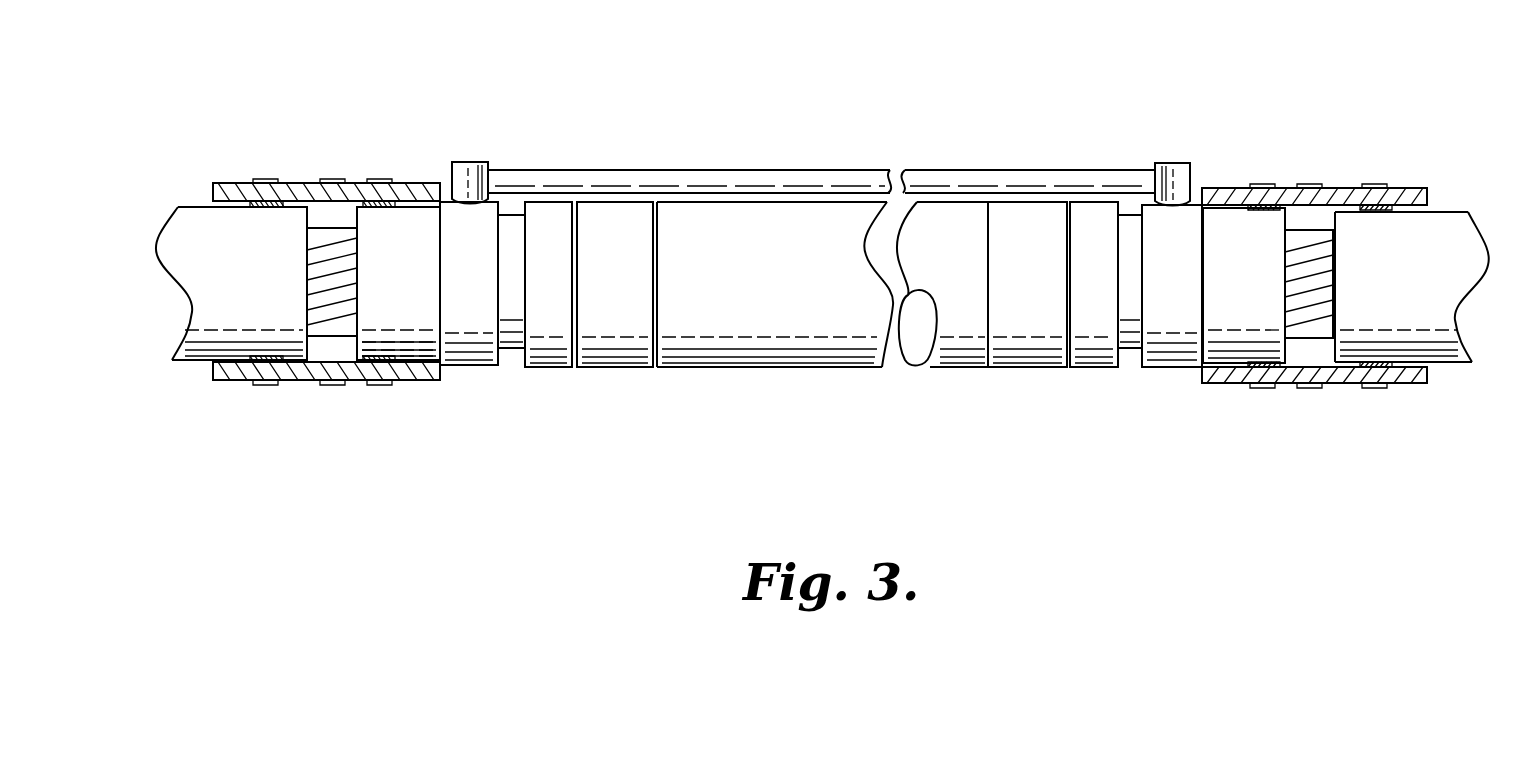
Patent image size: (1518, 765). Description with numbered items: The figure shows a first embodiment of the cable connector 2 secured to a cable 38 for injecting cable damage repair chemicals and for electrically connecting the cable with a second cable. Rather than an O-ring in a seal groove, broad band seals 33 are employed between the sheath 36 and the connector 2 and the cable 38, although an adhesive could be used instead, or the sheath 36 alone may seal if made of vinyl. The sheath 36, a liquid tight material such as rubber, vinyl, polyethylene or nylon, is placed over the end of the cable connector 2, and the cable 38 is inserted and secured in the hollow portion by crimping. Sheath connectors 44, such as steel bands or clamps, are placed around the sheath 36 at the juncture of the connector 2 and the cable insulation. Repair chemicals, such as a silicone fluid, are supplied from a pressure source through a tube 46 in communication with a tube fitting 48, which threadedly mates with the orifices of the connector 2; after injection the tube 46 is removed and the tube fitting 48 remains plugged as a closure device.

The cable connector 2 is at (622, 418).
The broad band seals 33 is at (242, 183).
The sheath 36 is at (441, 382).
The cable 38 is at (262, 348).
The sheath connectors 44 is at (327, 183).
The tube 46 is at (710, 170).
The tube fitting 48 is at (475, 160).